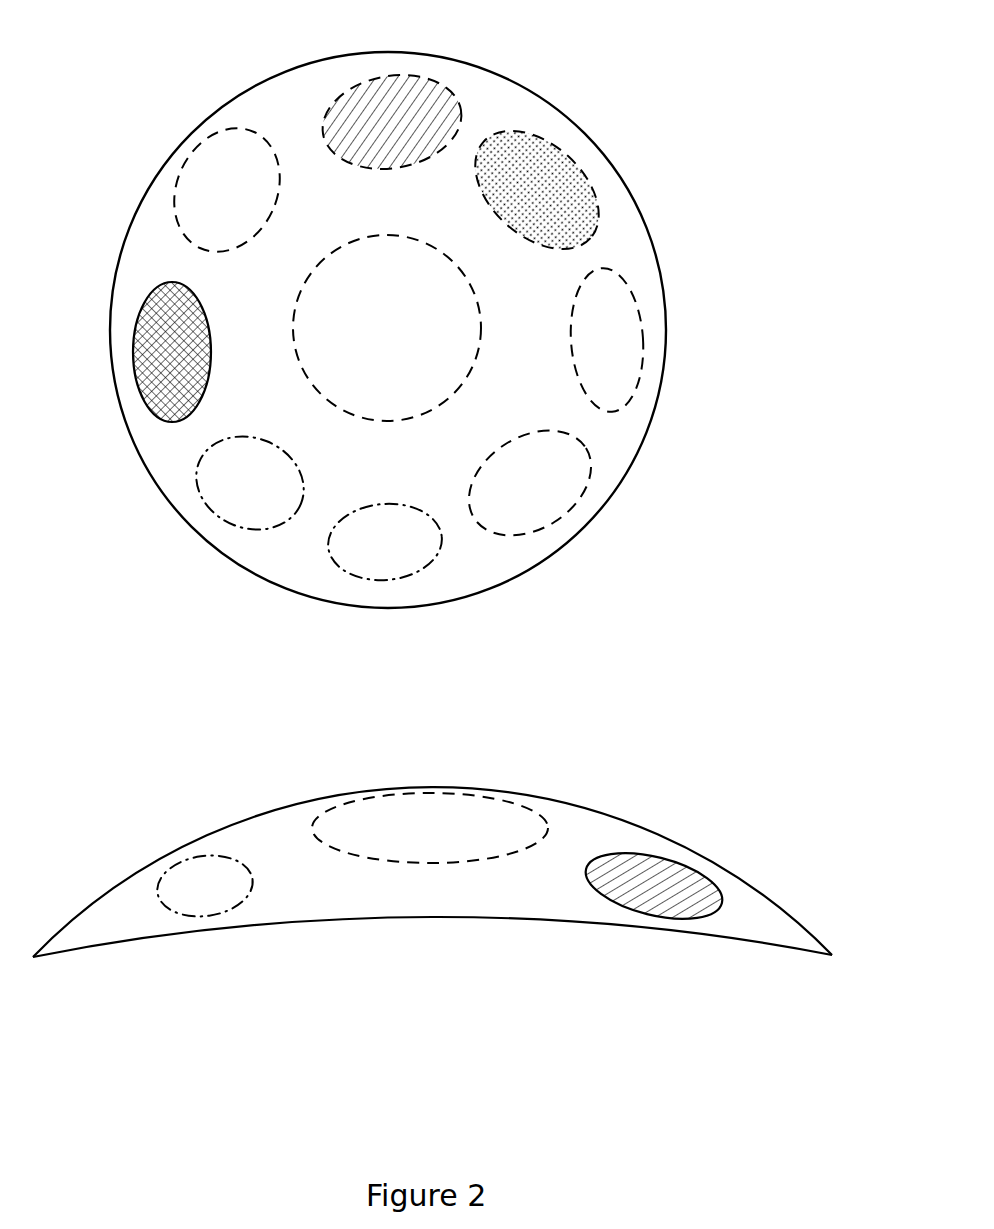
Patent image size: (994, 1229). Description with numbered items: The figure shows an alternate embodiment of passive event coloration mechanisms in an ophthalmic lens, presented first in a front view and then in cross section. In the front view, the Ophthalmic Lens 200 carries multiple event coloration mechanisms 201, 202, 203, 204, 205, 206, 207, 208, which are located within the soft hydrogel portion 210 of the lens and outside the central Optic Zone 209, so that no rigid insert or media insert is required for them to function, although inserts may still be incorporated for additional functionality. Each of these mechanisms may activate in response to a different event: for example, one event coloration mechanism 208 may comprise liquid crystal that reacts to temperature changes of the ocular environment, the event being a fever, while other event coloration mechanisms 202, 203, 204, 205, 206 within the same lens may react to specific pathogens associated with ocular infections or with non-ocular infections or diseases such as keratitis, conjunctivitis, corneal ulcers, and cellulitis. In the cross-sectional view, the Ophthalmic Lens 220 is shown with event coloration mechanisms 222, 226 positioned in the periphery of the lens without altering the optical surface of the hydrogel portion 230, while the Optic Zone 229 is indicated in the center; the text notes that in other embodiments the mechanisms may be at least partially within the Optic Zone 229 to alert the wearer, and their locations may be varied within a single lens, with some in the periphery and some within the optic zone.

The Ophthalmic Lens 200 is at (388, 389).
The event coloration mechanism 201 is at (210, 488).
The event coloration mechanism 202 is at (427, 556).
The event coloration mechanism 203 is at (575, 473).
The event coloration mechanism 204 is at (613, 289).
The event coloration mechanism 205 is at (583, 196).
The event coloration mechanism 206 is at (404, 78).
The event coloration mechanism 207 is at (213, 190).
The event coloration mechanism 208 is at (112, 342).
The Optic Zone 209 is at (377, 258).
The hydrogel portion 210 is at (308, 547).
The Ophthalmic Lens 220 is at (432, 940).
The event coloration mechanism 222 is at (200, 898).
The event coloration mechanism 226 is at (662, 902).
The Optic Zone 229 is at (383, 845).
The hydrogel portion 230 is at (545, 893).